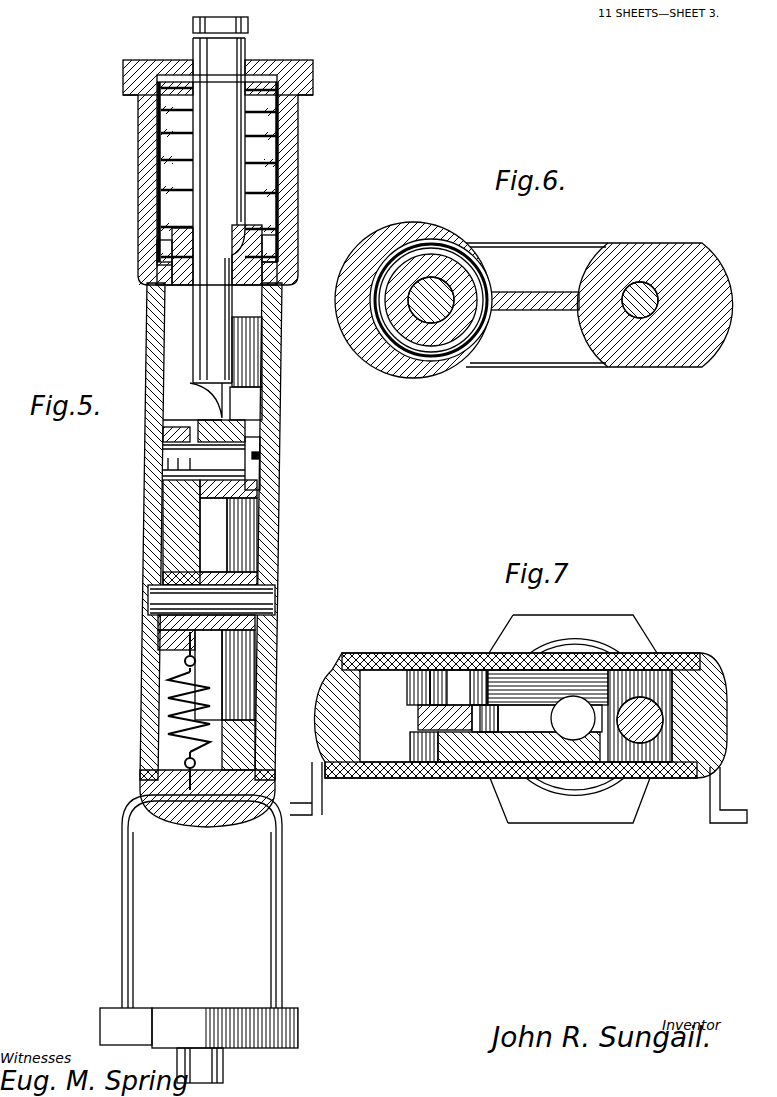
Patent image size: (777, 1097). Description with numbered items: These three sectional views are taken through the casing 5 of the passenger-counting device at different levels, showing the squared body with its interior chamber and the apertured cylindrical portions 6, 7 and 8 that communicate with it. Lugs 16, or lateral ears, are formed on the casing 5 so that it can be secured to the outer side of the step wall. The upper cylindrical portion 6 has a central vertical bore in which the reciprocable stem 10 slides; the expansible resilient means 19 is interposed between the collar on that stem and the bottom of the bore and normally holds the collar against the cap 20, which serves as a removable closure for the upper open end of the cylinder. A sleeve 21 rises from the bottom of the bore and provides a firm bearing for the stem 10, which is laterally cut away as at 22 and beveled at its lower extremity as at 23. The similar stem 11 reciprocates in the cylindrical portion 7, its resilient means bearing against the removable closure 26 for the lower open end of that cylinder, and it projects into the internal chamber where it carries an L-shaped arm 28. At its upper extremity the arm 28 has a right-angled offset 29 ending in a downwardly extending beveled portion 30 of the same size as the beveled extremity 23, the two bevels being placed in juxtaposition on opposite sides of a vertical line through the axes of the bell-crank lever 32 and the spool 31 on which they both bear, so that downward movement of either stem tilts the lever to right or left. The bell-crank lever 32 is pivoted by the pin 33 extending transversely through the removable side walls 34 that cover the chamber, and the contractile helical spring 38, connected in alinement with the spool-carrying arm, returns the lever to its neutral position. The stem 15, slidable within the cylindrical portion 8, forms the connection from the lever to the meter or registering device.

In FIG. 6, the casing 5 is at (580, 245).
In FIG. 7, the casing 5 is at (365, 655).
In FIG. 5, the upper cylindrical portion 6 is at (138, 108).
In FIG. 6, the upper cylindrical portion 6 is at (362, 240).
In FIG. 5, the cylindrical portion 7 is at (262, 912).
In FIG. 7, the cylindrical portion 7 is at (575, 717).
In FIG. 6, the cylindrical portion 8 is at (700, 270).
In FIG. 5, the reciprocable stem 10 is at (207, 172).
In FIG. 6, the reciprocable stem 10 is at (432, 312).
In FIG. 7, the reciprocable stem 10 is at (415, 735).
In FIG. 5, the stem 11 is at (223, 1067).
In FIG. 7, the stem 11 is at (575, 712).
In FIG. 6, the stem 15 is at (640, 318).
In FIG. 7, the lugs 16 is at (322, 815).
In FIG. 5, the expansible resilient means 19 is at (158, 140).
In FIG. 6, the expansible resilient means 19 is at (470, 360).
In FIG. 5, the cap 20 is at (312, 64).
In FIG. 5, the sleeve 21 is at (160, 252).
In FIG. 6, the sleeve 21 is at (440, 275).
In FIG. 5, the lateral cut-away 22 is at (238, 268).
In FIG. 5, the beveled extremity 23 is at (215, 393).
In FIG. 5, the removable closure 26 is at (290, 1020).
In FIG. 7, the removable closure 26 is at (628, 628).
In FIG. 5, the L-shaped arm 28 is at (245, 655).
In FIG. 7, the L-shaped arm 28 is at (545, 716).
In FIG. 5, the right-angled offset 29 is at (252, 360).
In FIG. 7, the right-angled offset 29 is at (522, 765).
In FIG. 5, the beveled portion 30 is at (250, 405).
In FIG. 5, the spool 31 is at (260, 492).
In FIG. 5, the bell-crank lever 32 is at (178, 640).
In FIG. 7, the bell-crank lever 32 is at (470, 680).
In FIG. 5, the pin 33 is at (175, 600).
In FIG. 5, the removable side walls 34 is at (150, 527).
In FIG. 7, the removable side walls 34 is at (455, 655).
In FIG. 5, the contractile helical spring 38 is at (168, 720).